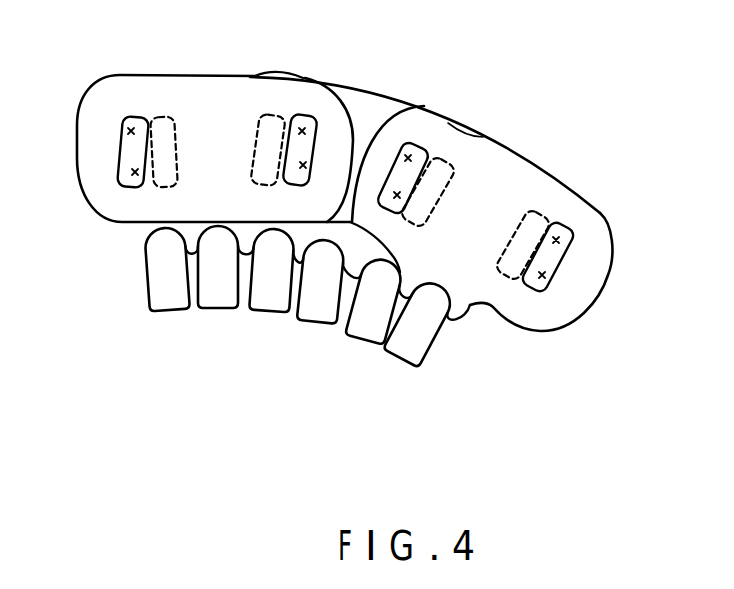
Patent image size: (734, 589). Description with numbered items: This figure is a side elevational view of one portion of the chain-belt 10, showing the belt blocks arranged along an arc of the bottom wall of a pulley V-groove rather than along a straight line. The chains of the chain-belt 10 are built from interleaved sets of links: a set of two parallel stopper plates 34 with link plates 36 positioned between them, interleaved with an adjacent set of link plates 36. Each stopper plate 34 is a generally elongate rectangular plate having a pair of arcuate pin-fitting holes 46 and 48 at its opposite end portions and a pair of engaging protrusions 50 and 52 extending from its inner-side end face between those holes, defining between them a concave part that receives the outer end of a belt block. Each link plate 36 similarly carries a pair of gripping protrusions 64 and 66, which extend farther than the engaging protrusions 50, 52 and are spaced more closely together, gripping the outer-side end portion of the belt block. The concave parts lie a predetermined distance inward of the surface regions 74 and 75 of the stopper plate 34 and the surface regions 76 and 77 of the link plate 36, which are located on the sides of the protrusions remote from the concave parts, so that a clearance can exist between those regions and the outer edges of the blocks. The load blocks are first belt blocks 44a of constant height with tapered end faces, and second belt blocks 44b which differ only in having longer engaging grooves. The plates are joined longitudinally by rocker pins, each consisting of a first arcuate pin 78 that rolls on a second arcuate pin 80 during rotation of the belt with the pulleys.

The chain-belt 10 is at (606, 119).
The stopper plate 34 is at (95, 113).
The link plate 36 is at (367, 110).
The first belt block 44a is at (215, 300).
The second belt block 44b is at (165, 300).
The pin-fitting hole 46 is at (122, 167).
The pin-fitting hole 48 is at (310, 131).
The engaging protrusion 50 is at (187, 237).
The engaging protrusion 52 is at (477, 310).
The gripping protrusion 64 is at (192, 254).
The gripping protrusion 66 is at (246, 255).
The surface region 74 is at (157, 221).
The surface region 75 is at (500, 314).
The surface region 76 is at (280, 221).
The surface region 77 is at (397, 243).
The first arcuate pin 78 is at (123, 120).
The second arcuate pin 80 is at (167, 120).